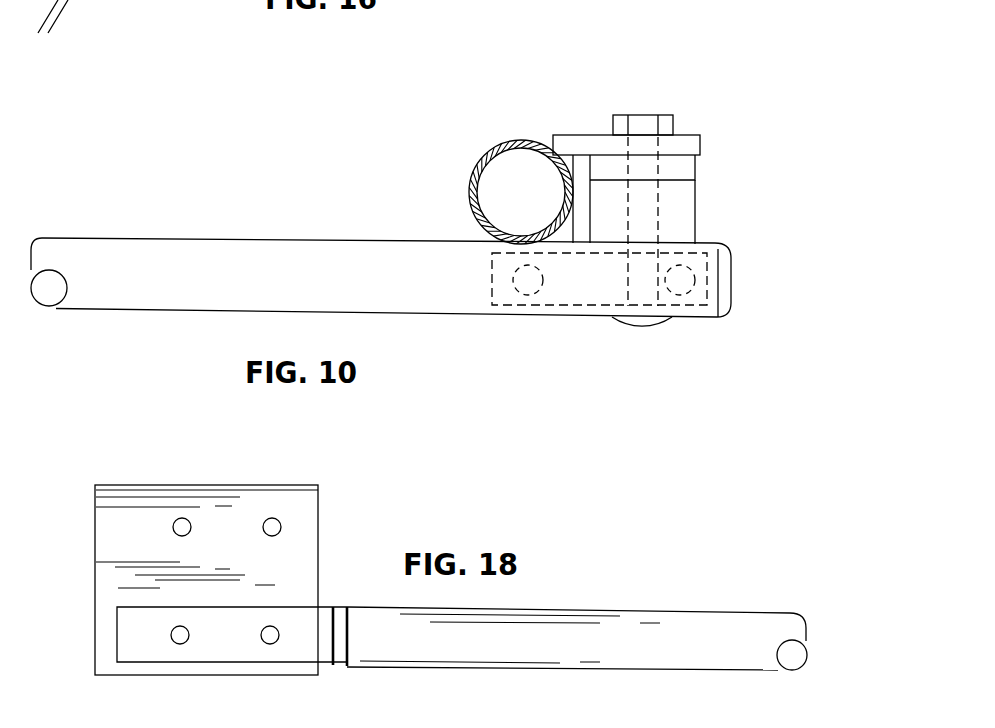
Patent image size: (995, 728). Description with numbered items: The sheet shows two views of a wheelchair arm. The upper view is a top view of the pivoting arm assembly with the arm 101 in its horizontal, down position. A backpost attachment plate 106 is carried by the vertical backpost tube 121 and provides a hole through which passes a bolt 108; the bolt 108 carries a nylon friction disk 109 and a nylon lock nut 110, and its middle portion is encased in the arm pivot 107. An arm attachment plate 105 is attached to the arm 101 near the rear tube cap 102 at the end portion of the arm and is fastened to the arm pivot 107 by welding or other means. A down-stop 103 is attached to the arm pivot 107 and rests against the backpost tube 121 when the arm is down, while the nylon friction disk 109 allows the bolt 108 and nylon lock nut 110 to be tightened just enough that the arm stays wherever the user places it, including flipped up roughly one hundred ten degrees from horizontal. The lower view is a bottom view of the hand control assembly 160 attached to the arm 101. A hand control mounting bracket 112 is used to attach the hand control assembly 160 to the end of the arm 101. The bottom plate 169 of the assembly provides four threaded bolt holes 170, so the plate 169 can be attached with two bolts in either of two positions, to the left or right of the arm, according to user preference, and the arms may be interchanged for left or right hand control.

In FIG. 10, the arm 101 is at (277, 272).
In FIG. 18, the arm 101 is at (668, 630).
In FIG. 10, the rear tube cap 102 is at (738, 280).
In FIG. 10, the down-stop 103 is at (582, 178).
In FIG. 10, the arm attachment plate 105 is at (592, 282).
In FIG. 10, the backpost attachment plate 106 is at (568, 135).
In FIG. 10, the arm pivot 107 is at (680, 208).
In FIG. 10, the bolt 108 is at (645, 337).
In FIG. 10, the nylon friction disk 109 is at (685, 168).
In FIG. 10, the nylon lock nut 110 is at (645, 112).
In FIG. 18, the hand control mounting bracket 112 is at (308, 630).
In FIG. 10, the vertical backpost tube 121 is at (470, 160).
In FIG. 18, the hand control assembly 160 is at (113, 447).
In FIG. 18, the bottom plate 169 is at (232, 537).
In FIG. 18, the threaded bolt holes 170 is at (277, 521).